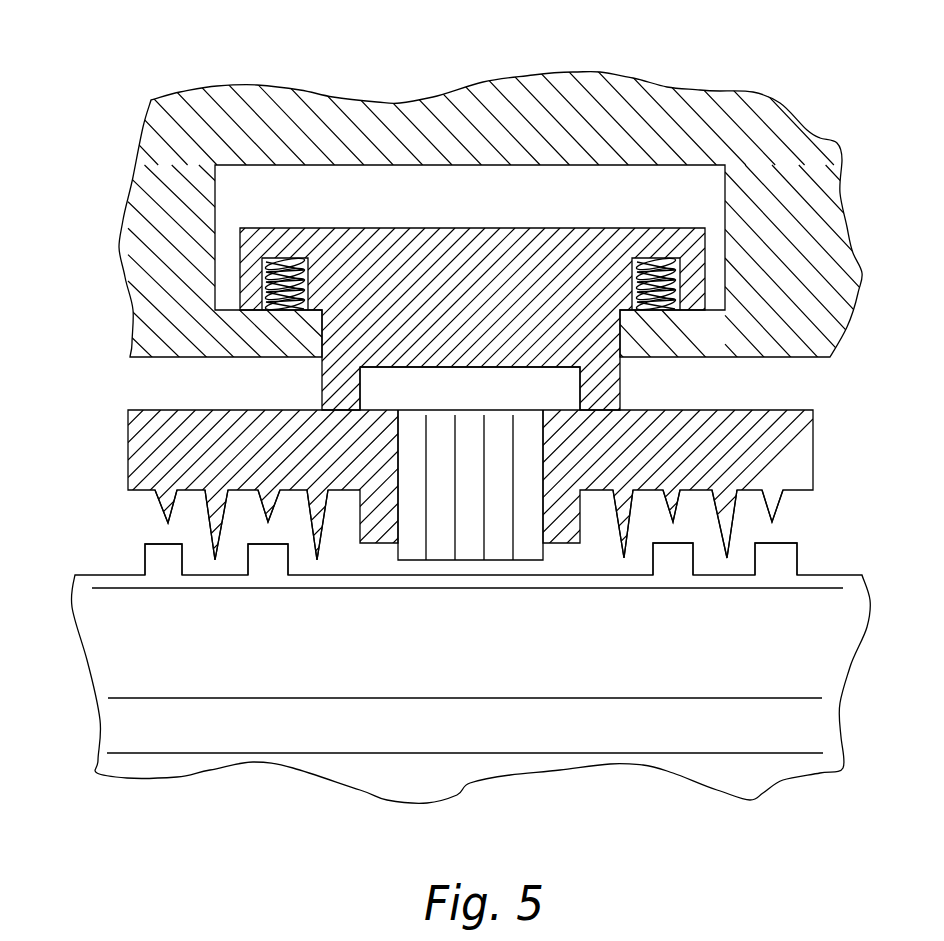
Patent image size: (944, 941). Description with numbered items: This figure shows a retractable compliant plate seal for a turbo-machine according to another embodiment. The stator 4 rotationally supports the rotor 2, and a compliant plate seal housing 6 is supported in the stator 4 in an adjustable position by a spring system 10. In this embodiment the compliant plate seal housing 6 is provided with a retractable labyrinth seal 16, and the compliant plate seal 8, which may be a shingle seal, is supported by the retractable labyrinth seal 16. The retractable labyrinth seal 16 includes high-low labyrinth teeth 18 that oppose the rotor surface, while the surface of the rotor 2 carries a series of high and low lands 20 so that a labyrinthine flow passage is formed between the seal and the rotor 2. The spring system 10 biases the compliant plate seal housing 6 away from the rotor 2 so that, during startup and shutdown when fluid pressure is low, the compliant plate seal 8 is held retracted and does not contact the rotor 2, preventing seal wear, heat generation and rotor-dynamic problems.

The rotor 2 is at (457, 667).
The stator 4 is at (372, 132).
The compliant plate seal housing 6 is at (550, 257).
The compliant plate seal 8 is at (498, 418).
The spring system 10 is at (294, 303).
The retractable labyrinth seal 16 is at (768, 443).
The high-low labyrinth teeth 18 is at (207, 526).
The high and low lands 20 is at (163, 560).